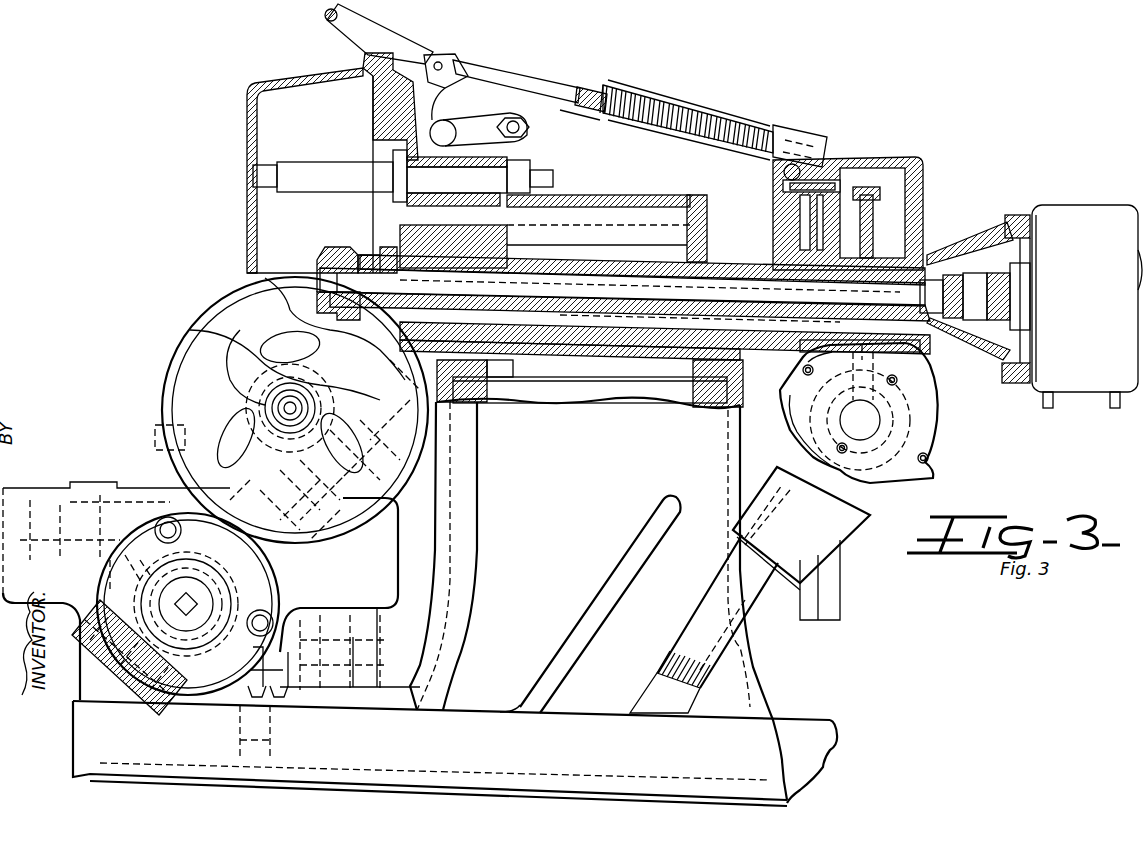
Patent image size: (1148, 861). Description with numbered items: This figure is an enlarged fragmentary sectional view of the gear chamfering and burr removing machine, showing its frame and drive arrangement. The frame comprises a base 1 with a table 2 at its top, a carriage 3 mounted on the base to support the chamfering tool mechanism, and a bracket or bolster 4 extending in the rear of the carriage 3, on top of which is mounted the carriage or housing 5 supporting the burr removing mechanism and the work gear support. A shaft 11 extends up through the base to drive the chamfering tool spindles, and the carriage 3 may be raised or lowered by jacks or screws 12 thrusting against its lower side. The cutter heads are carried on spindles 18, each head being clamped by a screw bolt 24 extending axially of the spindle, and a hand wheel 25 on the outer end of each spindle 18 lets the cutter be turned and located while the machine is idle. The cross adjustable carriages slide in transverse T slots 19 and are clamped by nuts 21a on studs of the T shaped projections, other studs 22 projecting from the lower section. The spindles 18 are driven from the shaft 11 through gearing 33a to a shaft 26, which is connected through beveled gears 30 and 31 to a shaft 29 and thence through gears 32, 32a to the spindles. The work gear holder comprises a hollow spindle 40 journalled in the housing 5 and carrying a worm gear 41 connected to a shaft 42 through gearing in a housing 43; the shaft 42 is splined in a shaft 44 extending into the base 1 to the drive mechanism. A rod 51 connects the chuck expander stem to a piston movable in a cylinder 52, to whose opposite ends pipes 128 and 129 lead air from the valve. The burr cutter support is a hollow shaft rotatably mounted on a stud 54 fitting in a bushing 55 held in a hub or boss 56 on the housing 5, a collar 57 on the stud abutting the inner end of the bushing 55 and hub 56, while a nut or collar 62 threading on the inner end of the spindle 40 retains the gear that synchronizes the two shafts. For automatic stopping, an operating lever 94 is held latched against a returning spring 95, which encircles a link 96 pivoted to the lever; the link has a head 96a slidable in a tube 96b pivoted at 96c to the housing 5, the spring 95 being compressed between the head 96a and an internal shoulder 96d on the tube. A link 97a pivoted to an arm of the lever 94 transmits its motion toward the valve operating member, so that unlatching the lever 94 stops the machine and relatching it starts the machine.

The base 1 is at (80, 780).
The table 2 is at (800, 748).
The carriage 3 is at (303, 673).
The bracket or bolster 4 is at (598, 580).
The carriage or housing 5 is at (420, 100).
The shaft 11 is at (240, 727).
The jacks or screws 12 is at (295, 703).
The spindle 18 is at (278, 403).
The T slots 19 is at (400, 510).
The nuts 21a is at (308, 330).
The studs 22 is at (384, 348).
The screw bolt 24 is at (258, 360).
The hand wheel 25 is at (212, 308).
The shaft 26 is at (93, 585).
The shaft 29 is at (282, 573).
The beveled gear 30 is at (97, 568).
The beveled gear 31 is at (197, 652).
The gear 32 is at (250, 380).
The gear 32a is at (400, 467).
The gearing 33a is at (339, 594).
The hollow spindle or shaft 40 is at (623, 262).
The worm gear 41 is at (875, 225).
The shaft 42 is at (930, 437).
The housing 43 is at (912, 417).
The shaft 44 is at (657, 690).
The rod 51 is at (675, 291).
The cylinder 52 is at (1072, 298).
The spindle or stud 54 is at (323, 177).
The bushing 55 is at (480, 176).
The hub or boss 56 is at (492, 145).
The collar 57 is at (393, 178).
The nut or collar 62 is at (337, 247).
The operating member or lever 94 is at (358, 30).
The returning spring 95 is at (637, 130).
The link 96 is at (562, 98).
The head 96a is at (775, 160).
The tube 96b is at (697, 93).
The pivot 96c is at (778, 200).
The internal shoulder 96d is at (598, 112).
The link 97a is at (575, 139).
The pipe 128 is at (1113, 408).
The pipe 129 is at (1046, 406).